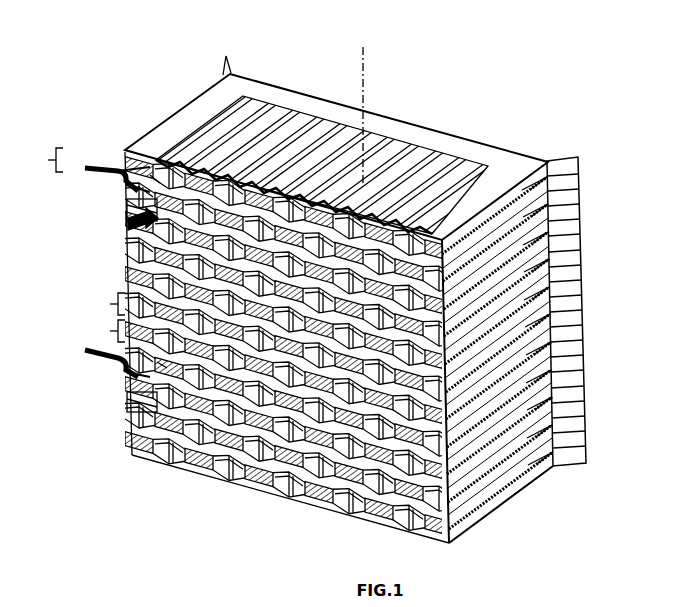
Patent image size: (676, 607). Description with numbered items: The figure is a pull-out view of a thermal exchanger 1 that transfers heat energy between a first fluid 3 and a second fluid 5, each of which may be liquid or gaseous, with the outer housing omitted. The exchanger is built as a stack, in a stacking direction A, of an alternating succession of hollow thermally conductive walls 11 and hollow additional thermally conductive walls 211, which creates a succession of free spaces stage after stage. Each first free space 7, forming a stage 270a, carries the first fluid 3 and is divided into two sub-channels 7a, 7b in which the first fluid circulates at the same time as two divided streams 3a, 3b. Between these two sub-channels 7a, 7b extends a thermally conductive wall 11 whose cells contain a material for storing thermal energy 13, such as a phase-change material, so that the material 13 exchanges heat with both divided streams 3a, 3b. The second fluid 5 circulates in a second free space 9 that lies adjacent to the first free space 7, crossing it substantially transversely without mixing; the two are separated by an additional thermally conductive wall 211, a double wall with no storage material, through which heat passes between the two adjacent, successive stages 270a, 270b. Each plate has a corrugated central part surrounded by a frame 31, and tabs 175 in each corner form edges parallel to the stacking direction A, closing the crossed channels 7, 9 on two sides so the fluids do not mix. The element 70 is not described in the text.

The thermal exchanger 1 is at (439, 108).
The first fluid 3 is at (100, 166).
The first divided stream 3a is at (147, 167).
The second divided stream 3b is at (140, 193).
The second fluid 5 is at (122, 240).
The first free space 7 is at (138, 158).
The first sub-channel 7a is at (150, 175).
The second sub-channel 7b is at (137, 203).
The second free space 9 is at (137, 213).
The thermally conductive wall 11 is at (214, 220).
The material for storing thermal energy 13 is at (332, 220).
The frame 31 is at (511, 167).
The fin end portions 70 is at (523, 193).
The tabs 175 is at (571, 160).
The additional thermally conductive wall 211 is at (238, 198).
The first stage 270a is at (65, 231).
The second stage 270b is at (96, 331).
The stacking direction A is at (368, 66).